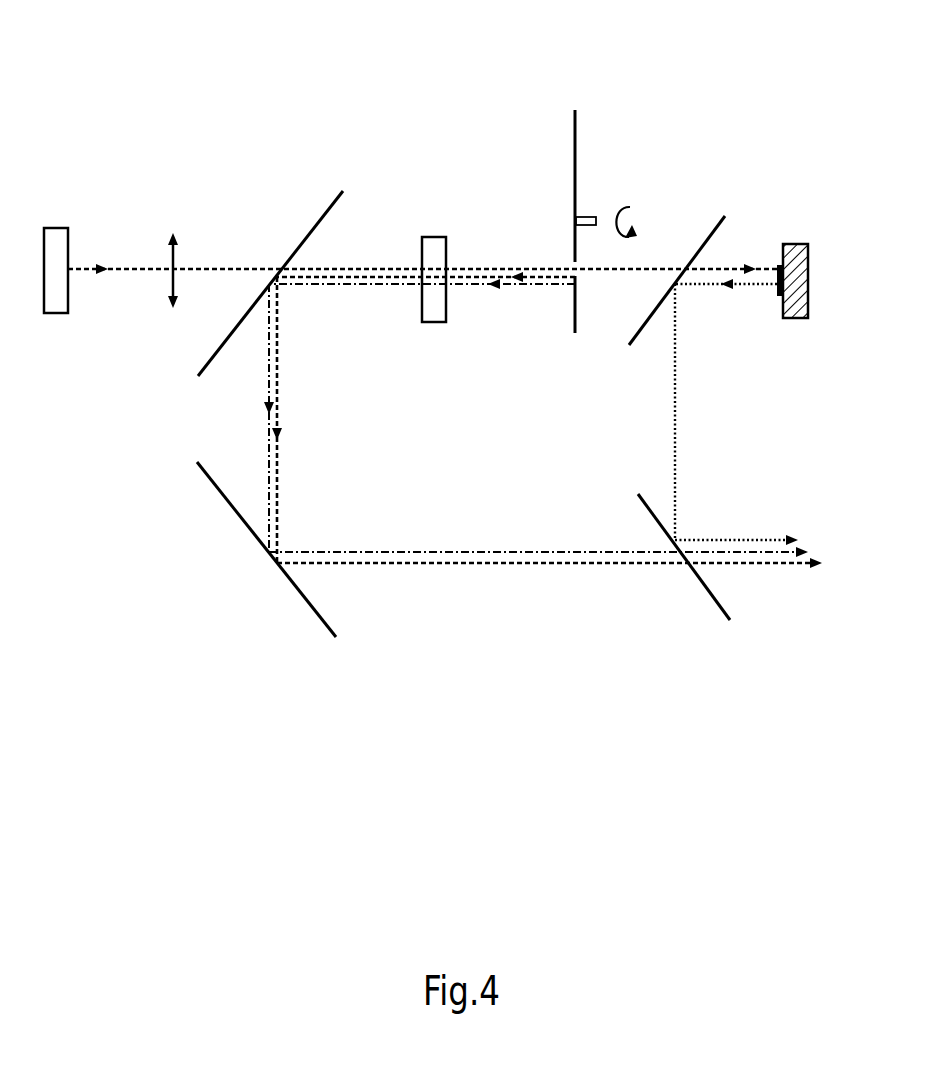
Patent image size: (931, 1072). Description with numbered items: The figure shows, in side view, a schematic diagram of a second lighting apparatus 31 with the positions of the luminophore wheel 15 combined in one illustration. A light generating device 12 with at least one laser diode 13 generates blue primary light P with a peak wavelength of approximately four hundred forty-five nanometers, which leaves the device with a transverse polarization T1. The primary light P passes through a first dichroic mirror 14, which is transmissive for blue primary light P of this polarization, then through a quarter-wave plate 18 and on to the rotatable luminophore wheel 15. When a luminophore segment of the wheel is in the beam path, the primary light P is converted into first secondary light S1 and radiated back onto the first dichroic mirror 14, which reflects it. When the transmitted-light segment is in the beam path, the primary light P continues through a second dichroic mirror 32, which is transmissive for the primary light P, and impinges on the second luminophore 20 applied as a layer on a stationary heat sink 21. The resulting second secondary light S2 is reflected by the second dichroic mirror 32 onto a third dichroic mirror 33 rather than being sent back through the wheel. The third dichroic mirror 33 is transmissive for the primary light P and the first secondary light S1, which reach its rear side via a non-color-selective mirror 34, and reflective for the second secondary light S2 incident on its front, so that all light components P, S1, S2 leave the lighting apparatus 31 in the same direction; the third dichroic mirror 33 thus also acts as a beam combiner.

The light generating device 12 is at (58, 238).
The laser diode 13 is at (57, 246).
The first dichroic mirror 14 is at (323, 215).
The luminophore wheel 15 is at (578, 149).
The quarter-wave plate 18 is at (437, 237).
The second luminophore 20 is at (777, 263).
The heat sink 21 is at (797, 244).
The second lighting apparatus 31 is at (375, 90).
The second dichroic mirror 32 is at (714, 226).
The third dichroic mirror 33 is at (712, 596).
The non-color-selective mirror 34 is at (310, 606).
The transverse polarization T1 is at (178, 260).
The primary light P is at (123, 272).
The first secondary light S1 is at (266, 383).
The second secondary light S2 is at (678, 372).